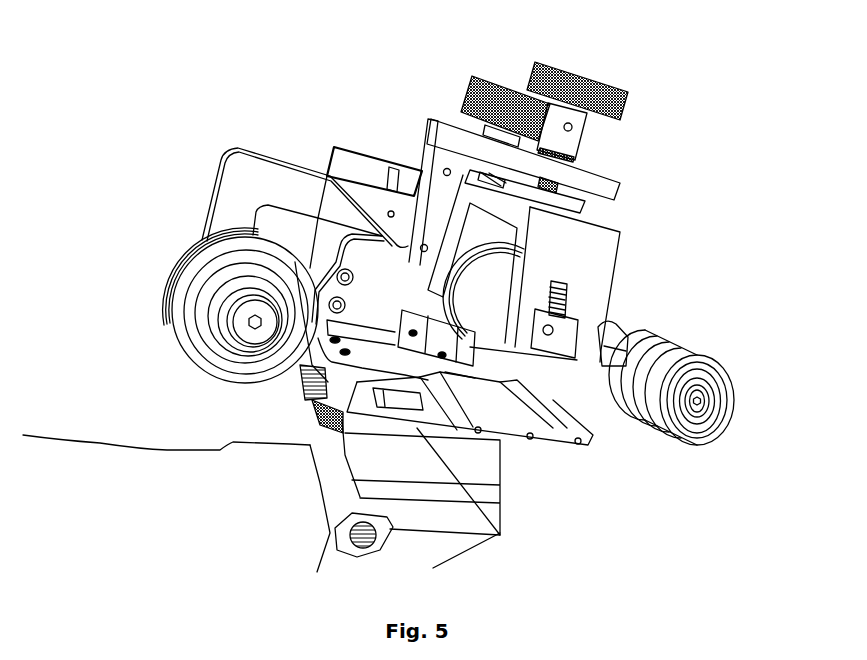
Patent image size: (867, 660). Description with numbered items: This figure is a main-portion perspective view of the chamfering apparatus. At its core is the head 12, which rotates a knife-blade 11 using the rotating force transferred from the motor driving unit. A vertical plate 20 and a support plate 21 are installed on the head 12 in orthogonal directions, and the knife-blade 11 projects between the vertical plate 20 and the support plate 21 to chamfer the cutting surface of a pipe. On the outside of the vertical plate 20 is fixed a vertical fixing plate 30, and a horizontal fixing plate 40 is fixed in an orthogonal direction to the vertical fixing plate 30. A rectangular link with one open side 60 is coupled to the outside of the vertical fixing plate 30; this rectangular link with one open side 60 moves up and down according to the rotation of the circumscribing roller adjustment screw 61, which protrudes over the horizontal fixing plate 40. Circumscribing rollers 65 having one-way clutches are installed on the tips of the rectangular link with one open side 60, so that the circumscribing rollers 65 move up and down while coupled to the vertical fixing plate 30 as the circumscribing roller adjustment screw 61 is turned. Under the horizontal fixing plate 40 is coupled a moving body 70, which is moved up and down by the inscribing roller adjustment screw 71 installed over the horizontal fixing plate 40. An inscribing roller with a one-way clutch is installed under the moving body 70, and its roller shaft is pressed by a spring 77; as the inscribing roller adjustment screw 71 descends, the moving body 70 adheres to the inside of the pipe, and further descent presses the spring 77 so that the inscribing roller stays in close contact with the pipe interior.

The knife-blade 11 is at (441, 420).
The head 12 is at (500, 520).
The vertical plate 20 is at (385, 262).
The support plate 21 is at (382, 358).
The vertical fixing plate 30 is at (425, 148).
The horizontal fixing plate 40 is at (610, 187).
The rectangular link with one open side 60 is at (262, 184).
The circumscribing roller adjustment screw 61 is at (587, 125).
The circumscribing rollers 65 is at (190, 286).
The moving body 70 is at (587, 262).
The inscribing roller adjustment screw 71 is at (637, 100).
The spring 77 is at (580, 292).